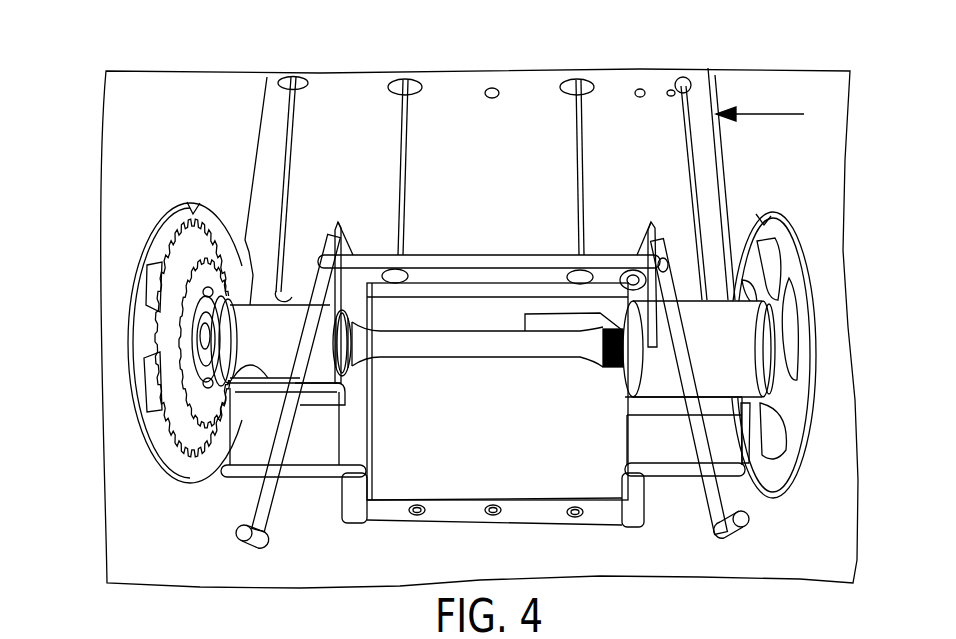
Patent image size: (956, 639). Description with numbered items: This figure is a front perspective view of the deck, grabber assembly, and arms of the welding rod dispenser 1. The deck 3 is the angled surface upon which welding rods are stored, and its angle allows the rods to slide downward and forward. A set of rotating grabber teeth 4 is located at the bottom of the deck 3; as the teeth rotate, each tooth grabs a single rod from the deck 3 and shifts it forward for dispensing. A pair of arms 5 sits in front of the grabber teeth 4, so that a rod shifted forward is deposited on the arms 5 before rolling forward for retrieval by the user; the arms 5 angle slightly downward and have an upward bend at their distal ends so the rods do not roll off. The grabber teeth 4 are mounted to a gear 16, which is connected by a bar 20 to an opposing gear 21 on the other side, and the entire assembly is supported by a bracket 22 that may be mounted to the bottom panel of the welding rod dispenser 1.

The welding rod dispenser 1 is at (85, 102).
The deck 3 is at (517, 143).
The rotating grabber teeth 4 is at (192, 352).
The arms 5 is at (280, 450).
The gear 16 is at (165, 258).
The bar 20 is at (508, 348).
The opposing gear 21 is at (810, 323).
The bracket 22 is at (463, 507).